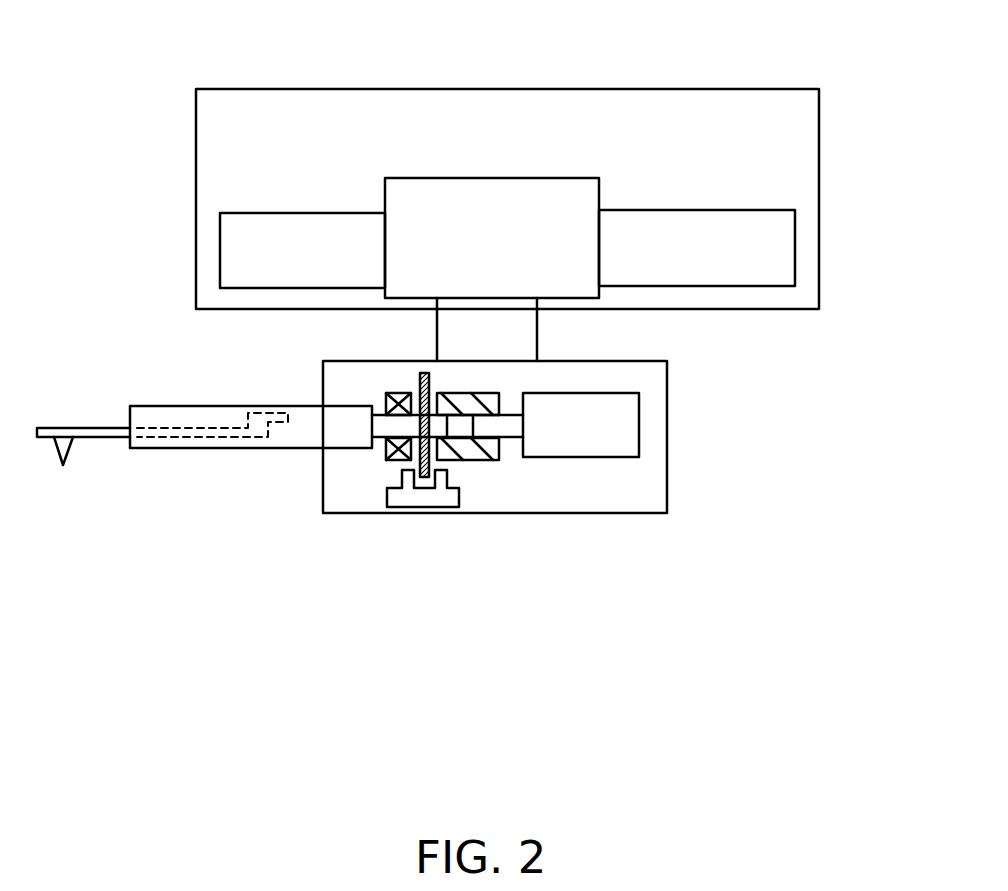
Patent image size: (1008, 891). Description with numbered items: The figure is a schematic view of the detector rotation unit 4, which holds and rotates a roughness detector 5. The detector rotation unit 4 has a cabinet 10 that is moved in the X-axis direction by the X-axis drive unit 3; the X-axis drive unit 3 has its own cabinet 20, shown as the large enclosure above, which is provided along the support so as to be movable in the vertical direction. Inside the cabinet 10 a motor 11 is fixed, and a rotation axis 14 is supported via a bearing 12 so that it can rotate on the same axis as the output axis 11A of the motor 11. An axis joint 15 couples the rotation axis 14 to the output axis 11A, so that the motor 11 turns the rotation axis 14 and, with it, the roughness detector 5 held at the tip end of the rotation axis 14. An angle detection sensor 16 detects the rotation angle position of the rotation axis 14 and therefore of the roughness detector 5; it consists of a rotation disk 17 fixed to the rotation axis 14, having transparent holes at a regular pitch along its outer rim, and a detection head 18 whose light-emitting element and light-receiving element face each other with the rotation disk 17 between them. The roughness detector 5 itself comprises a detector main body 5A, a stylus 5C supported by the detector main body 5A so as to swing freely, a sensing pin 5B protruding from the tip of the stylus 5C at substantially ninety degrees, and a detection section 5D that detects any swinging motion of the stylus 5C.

The X-axis drive unit 3 is at (546, 180).
The cabinet 20 is at (819, 128).
The detector rotation unit 4 is at (667, 377).
The cabinet 10 is at (522, 479).
The motor 11 is at (627, 442).
The output axis 11A is at (510, 428).
The bearing 12 is at (403, 393).
The rotation axis 14 is at (378, 428).
The axis joint 15 is at (482, 400).
The angle detection sensor 16 is at (443, 501).
The rotation disk 17 is at (429, 463).
The detection head 18 is at (423, 527).
The roughness detector 5 is at (204, 429).
The detector main body 5A is at (155, 406).
The sensing pin 5B is at (62, 458).
The stylus 5C is at (92, 428).
The detection section 5D is at (248, 417).